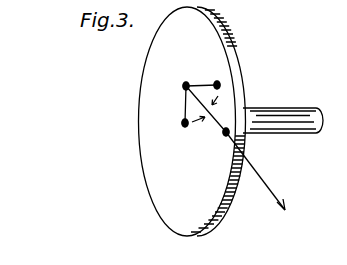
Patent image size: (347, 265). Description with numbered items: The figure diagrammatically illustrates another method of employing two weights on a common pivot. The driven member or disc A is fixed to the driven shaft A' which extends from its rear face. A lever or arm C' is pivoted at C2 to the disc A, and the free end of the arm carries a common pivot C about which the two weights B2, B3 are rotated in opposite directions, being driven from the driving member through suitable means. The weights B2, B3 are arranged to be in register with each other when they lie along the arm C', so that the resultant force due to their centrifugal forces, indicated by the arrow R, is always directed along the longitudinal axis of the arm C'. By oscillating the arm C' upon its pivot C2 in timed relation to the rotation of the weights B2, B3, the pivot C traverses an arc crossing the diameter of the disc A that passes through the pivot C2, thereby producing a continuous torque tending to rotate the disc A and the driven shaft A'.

The driven member or disc A is at (197, 121).
The driven shaft A' is at (283, 109).
The weight B2 is at (182, 123).
The weight B3 is at (218, 81).
The common pivot C is at (198, 97).
The lever or arm C' is at (202, 150).
The pivot of the arm C2 is at (228, 134).
The direction of resultant force R is at (262, 171).